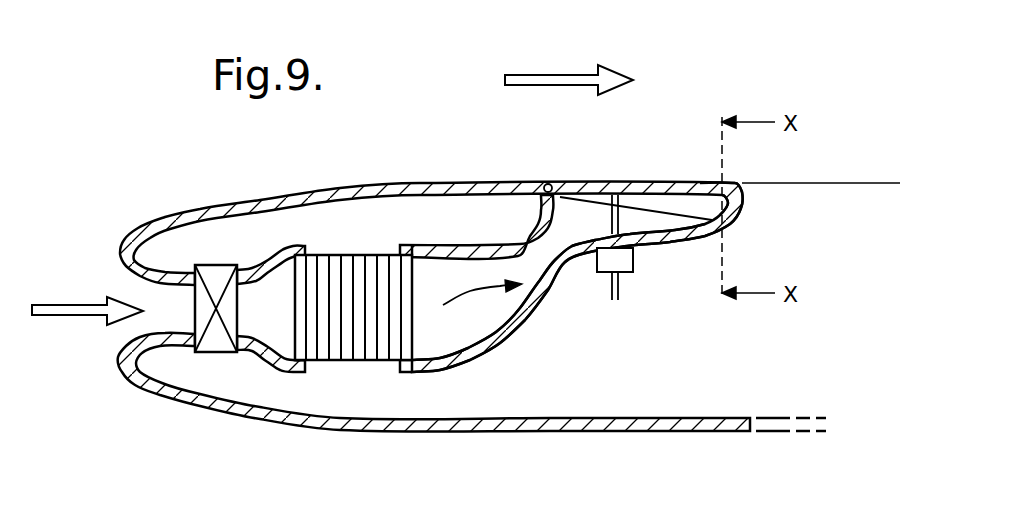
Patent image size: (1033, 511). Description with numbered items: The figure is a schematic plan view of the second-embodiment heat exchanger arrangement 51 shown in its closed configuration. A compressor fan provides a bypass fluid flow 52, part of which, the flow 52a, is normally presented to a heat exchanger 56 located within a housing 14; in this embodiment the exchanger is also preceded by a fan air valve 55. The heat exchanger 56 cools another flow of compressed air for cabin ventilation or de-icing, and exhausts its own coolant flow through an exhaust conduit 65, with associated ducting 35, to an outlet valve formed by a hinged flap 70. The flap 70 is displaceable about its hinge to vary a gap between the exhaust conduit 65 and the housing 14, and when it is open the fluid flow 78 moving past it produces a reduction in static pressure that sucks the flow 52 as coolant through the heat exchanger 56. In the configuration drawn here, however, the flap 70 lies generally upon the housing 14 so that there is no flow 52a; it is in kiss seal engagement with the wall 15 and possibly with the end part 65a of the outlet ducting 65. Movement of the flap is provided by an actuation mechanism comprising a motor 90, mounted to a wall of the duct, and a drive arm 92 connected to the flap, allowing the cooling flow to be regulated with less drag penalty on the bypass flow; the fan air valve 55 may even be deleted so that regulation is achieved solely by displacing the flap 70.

The housing 14 is at (182, 216).
The wall 15 is at (160, 390).
The ducting 35 is at (447, 243).
The heat exchanger arrangement 51 is at (327, 243).
The bypass fluid flow 52 is at (56, 316).
The part of bypass fluid flow 52a is at (490, 300).
The fan air valve 55 is at (218, 353).
The heat exchanger 56 is at (345, 347).
The exhaust conduit 65 is at (437, 370).
The end part of outlet ducting 65a is at (660, 243).
The hinged flap 70 is at (700, 182).
The fluid flow 78 is at (524, 80).
The motor 90 is at (638, 268).
The drive arm 92 is at (604, 232).